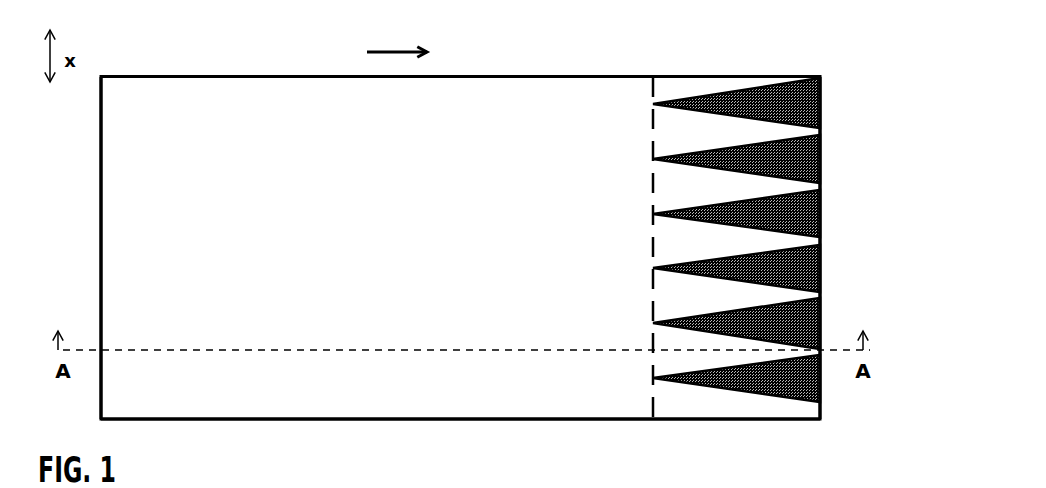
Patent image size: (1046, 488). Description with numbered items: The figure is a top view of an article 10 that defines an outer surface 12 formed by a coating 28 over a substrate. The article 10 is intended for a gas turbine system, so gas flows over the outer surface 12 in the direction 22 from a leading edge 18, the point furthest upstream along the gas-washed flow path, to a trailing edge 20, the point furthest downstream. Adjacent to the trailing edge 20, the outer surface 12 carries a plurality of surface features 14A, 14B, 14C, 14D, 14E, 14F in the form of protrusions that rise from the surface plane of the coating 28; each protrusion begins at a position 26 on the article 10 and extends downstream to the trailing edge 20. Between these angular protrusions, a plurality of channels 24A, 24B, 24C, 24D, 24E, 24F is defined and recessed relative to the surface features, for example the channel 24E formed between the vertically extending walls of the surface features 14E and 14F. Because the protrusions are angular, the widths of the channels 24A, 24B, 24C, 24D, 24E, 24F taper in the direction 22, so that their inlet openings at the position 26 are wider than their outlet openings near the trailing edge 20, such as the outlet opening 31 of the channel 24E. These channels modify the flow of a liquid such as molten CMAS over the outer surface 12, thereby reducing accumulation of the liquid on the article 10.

The article 10 is at (652, 43).
The outer surface 12 is at (273, 402).
The surface feature 14A is at (802, 116).
The surface feature 14B is at (773, 171).
The surface feature 14C is at (774, 226).
The surface feature 14D is at (769, 280).
The surface feature 14E is at (773, 335).
The surface feature 14F is at (776, 390).
The leading edge 18 is at (83, 262).
The trailing edge 20 is at (838, 212).
The direction 22 is at (397, 40).
The channel 24A is at (673, 142).
The channel 24B is at (675, 197).
The channel 24C is at (675, 252).
The channel 24D is at (670, 305).
The channel 24E is at (670, 355).
The channel 24F is at (673, 417).
The position 26 is at (650, 388).
The coating 28 is at (396, 257).
The outlet opening 31 is at (827, 355).